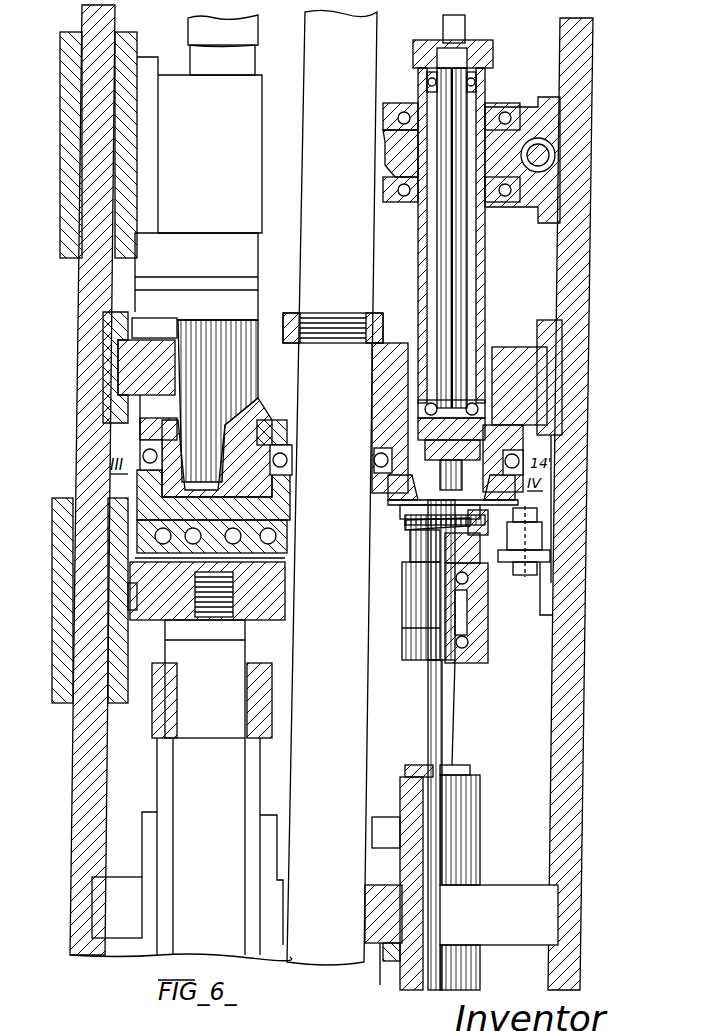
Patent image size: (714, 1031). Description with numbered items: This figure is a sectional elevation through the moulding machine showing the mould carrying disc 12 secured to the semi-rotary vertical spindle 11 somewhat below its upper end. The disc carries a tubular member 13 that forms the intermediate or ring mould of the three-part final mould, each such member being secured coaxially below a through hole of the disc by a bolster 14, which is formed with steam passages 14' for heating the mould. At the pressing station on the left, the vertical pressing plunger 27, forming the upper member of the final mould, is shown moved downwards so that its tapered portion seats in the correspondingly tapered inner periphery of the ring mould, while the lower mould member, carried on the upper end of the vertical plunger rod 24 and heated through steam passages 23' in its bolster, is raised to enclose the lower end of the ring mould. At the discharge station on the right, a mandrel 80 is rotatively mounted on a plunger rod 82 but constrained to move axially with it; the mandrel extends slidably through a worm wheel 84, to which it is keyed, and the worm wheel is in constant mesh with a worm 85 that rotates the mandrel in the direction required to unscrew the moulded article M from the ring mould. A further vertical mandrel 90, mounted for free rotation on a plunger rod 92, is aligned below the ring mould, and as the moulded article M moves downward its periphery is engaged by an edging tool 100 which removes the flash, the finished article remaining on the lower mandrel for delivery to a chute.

The semi-rotary vertical spindle 11 is at (333, 487).
The mould carrying disc 12 is at (515, 360).
The tubular member (ring mould) 13 is at (445, 490).
The bolster 14 is at (461, 457).
The steam passages 14' is at (232, 457).
The steam passages 23' is at (231, 536).
The vertical plunger rod 24 is at (212, 679).
The vertical pressing plunger 27 is at (195, 329).
The mandrel 80 is at (478, 522).
The plunger rod 82 is at (455, 249).
The worm wheel 84 is at (512, 150).
The worm 85 is at (556, 150).
The further vertical mandrel (lower mandrel) 90 is at (408, 545).
The plunger rod 92 is at (448, 705).
The edging tool 100 is at (524, 535).
The moulded article M is at (403, 523).